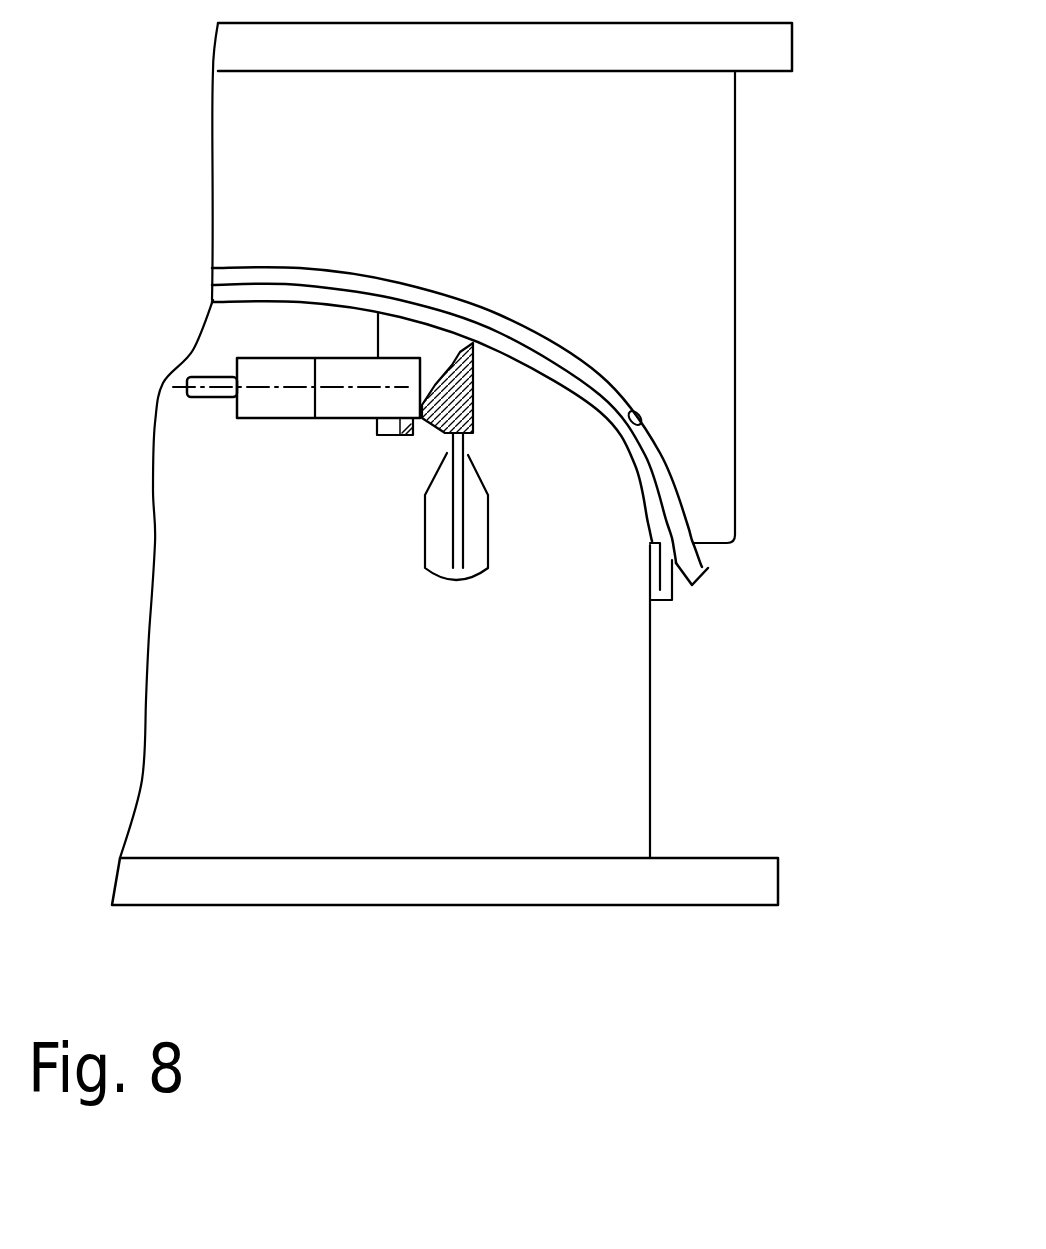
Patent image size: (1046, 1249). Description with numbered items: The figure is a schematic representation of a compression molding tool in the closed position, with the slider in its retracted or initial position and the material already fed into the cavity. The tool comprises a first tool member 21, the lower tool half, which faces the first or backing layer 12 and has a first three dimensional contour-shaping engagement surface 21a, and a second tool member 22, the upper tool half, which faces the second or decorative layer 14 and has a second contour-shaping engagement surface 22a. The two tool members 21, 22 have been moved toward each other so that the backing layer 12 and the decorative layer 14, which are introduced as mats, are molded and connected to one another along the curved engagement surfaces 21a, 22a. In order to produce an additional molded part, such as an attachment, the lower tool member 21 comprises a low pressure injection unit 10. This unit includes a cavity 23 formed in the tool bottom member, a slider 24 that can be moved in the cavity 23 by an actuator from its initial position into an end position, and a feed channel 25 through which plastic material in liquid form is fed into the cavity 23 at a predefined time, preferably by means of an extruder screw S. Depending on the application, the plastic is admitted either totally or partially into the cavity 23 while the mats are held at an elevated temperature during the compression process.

The low pressure injection unit 10 is at (405, 632).
The first or backing layer 12 is at (667, 600).
The second or decorative layer 14 is at (700, 578).
The first tool member 21 is at (167, 533).
The first three dimensional molding contour or contour-shaping engagement surface 21a is at (647, 495).
The second tool member 22 is at (225, 138).
The second three dimensional molding contour or contour-shaping engagement surface 22a is at (645, 426).
The cavity 23 is at (475, 400).
The slider 24 is at (357, 420).
The feed channel 25 is at (443, 442).
The extruder screw S is at (480, 535).